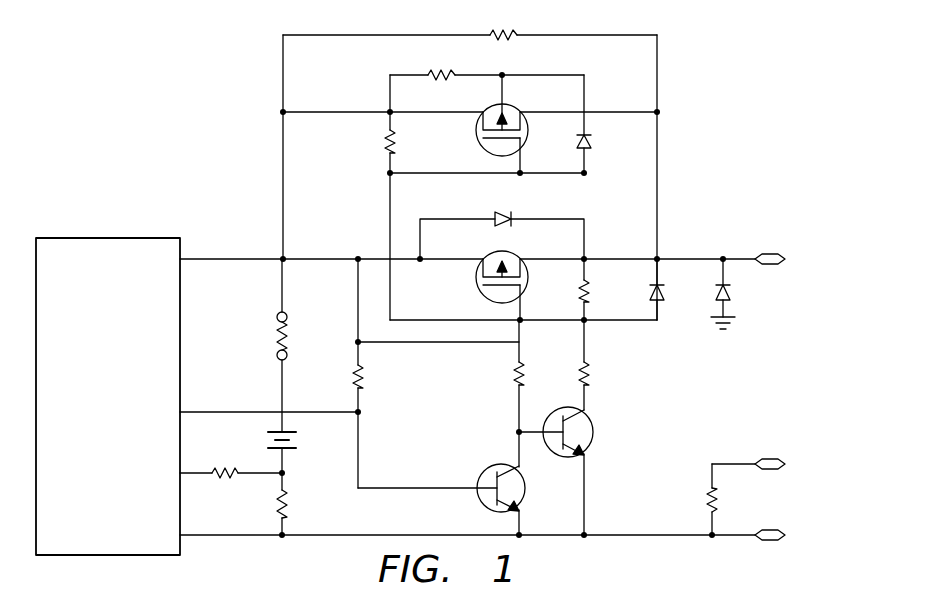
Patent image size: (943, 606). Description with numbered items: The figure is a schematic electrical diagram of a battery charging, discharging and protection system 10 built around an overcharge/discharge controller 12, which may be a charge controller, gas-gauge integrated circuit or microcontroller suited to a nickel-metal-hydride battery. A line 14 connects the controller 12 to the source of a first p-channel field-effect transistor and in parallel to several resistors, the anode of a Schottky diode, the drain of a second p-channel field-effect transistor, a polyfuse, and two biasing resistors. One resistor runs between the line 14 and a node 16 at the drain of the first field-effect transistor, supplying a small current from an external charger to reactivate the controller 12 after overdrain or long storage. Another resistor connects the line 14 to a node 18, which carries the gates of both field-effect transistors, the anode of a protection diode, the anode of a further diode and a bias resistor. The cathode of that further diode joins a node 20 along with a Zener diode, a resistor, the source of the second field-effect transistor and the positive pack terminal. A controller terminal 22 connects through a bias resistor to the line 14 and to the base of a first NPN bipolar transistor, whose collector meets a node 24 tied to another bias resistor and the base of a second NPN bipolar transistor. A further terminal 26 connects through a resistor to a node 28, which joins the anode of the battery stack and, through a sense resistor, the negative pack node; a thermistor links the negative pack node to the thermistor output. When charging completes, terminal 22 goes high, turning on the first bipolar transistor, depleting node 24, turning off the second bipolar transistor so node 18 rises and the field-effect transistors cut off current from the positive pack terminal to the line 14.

The battery charging, discharging and protection system 10 is at (166, 146).
The overcharge/discharge controller 12 is at (121, 448).
The line 14 is at (232, 258).
The node 16 is at (660, 112).
The node 18 is at (390, 215).
The node 20 is at (660, 256).
The terminal 22 is at (232, 412).
The node 24 is at (283, 188).
The terminal 26 is at (195, 473).
The node 28 is at (286, 474).